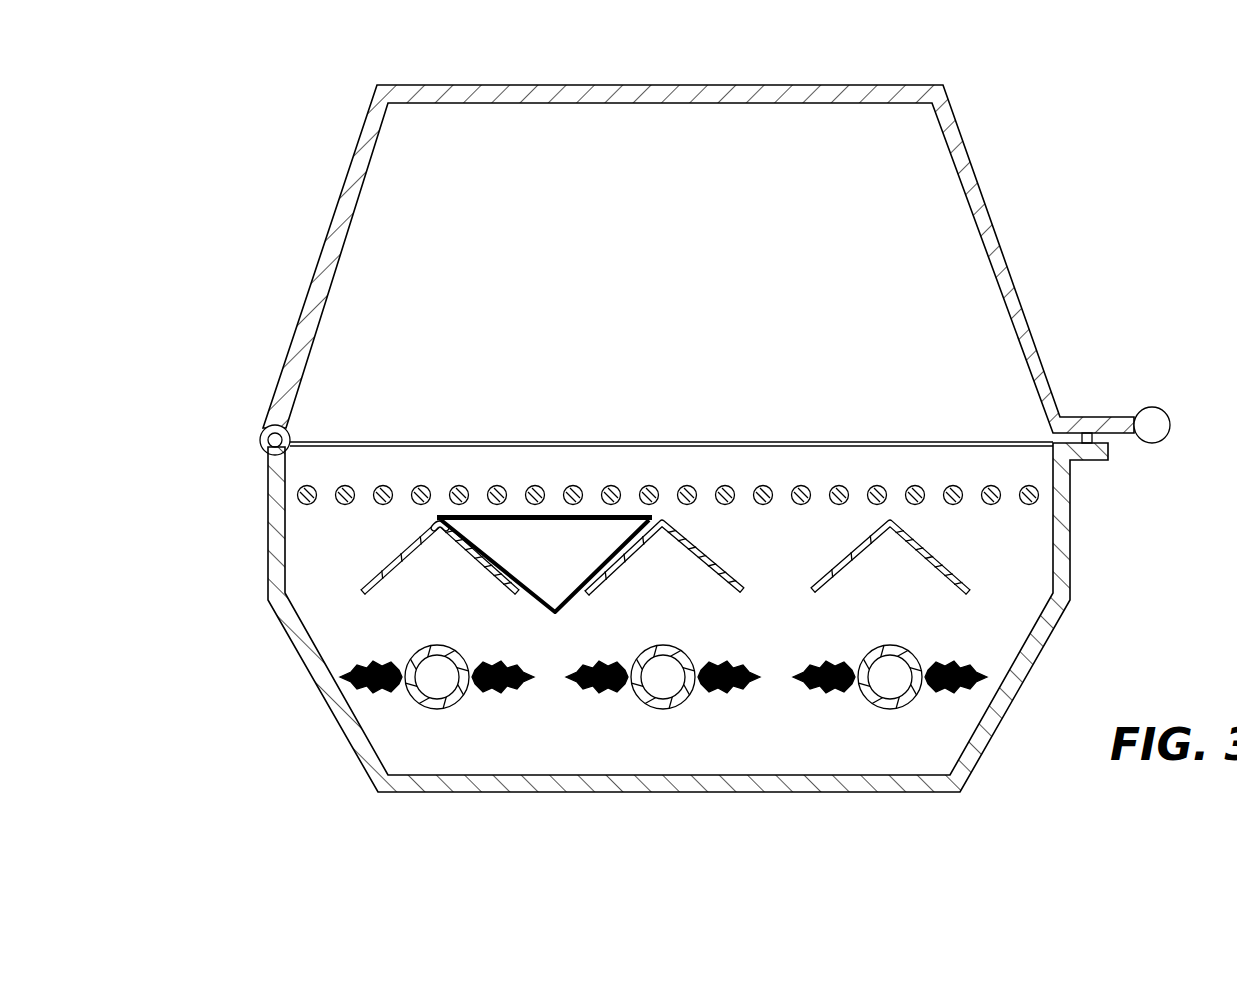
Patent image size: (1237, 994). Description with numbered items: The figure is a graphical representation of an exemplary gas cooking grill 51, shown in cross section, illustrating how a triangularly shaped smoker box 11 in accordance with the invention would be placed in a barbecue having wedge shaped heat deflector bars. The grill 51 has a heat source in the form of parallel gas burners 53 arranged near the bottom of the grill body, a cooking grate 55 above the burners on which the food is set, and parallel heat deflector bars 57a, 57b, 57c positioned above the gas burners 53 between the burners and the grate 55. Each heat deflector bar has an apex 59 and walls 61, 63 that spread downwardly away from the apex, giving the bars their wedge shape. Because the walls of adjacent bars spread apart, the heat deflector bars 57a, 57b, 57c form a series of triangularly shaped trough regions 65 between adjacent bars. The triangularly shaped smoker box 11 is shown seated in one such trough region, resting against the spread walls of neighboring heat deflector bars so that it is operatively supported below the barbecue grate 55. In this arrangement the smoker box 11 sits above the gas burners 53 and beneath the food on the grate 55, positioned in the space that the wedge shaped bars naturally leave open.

The gas cooking grill 51 is at (258, 382).
The cooking grate 55 is at (492, 497).
The V-shaped trough 11 is at (628, 515).
The trough regions 65 is at (823, 538).
The heat deflector bar 57a is at (408, 570).
The heat deflector bar 57b is at (746, 566).
The heat deflector bar 57c is at (972, 566).
The apex 59 is at (436, 524).
The wall 61 is at (392, 566).
The wall 63 is at (512, 586).
The gas burners 53 is at (445, 708).